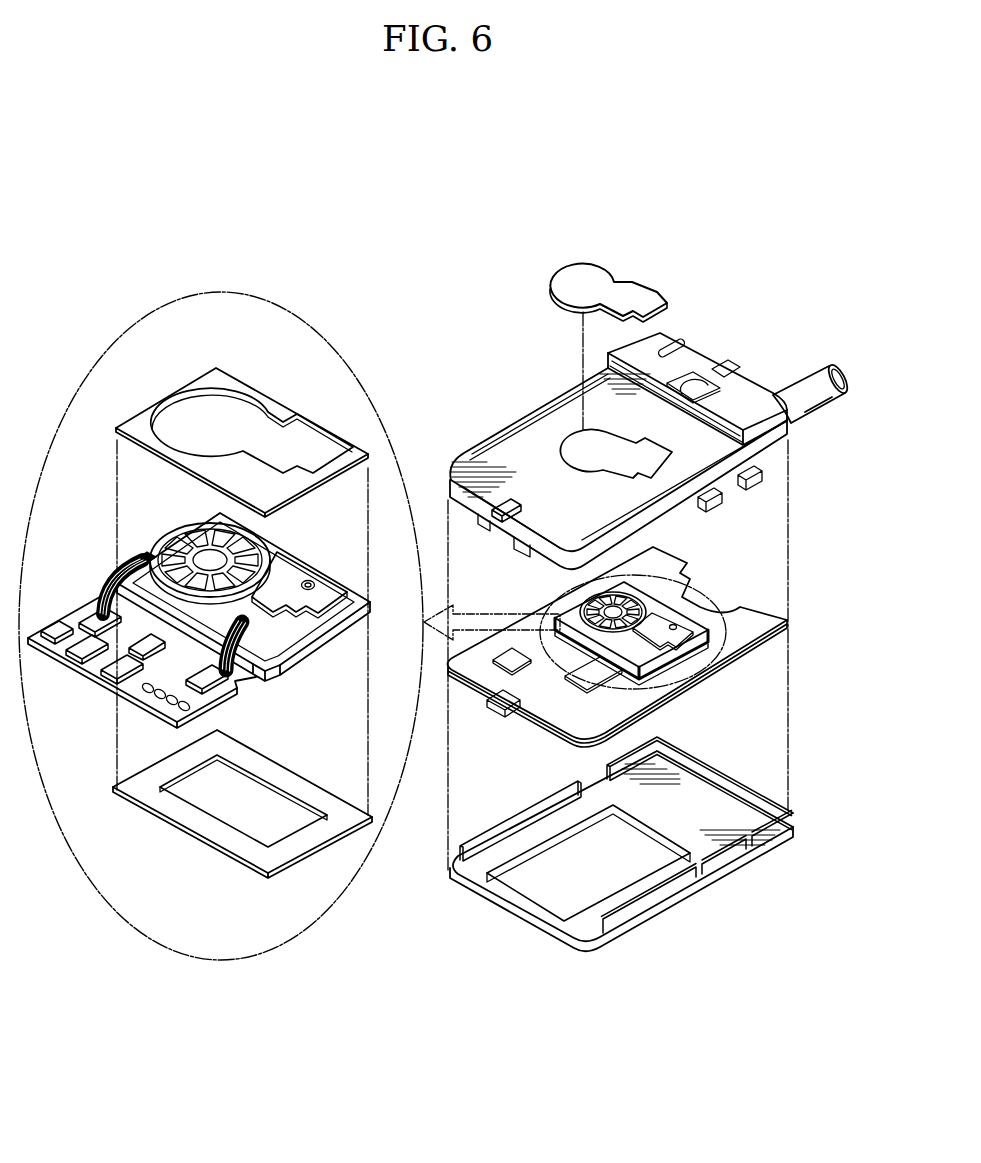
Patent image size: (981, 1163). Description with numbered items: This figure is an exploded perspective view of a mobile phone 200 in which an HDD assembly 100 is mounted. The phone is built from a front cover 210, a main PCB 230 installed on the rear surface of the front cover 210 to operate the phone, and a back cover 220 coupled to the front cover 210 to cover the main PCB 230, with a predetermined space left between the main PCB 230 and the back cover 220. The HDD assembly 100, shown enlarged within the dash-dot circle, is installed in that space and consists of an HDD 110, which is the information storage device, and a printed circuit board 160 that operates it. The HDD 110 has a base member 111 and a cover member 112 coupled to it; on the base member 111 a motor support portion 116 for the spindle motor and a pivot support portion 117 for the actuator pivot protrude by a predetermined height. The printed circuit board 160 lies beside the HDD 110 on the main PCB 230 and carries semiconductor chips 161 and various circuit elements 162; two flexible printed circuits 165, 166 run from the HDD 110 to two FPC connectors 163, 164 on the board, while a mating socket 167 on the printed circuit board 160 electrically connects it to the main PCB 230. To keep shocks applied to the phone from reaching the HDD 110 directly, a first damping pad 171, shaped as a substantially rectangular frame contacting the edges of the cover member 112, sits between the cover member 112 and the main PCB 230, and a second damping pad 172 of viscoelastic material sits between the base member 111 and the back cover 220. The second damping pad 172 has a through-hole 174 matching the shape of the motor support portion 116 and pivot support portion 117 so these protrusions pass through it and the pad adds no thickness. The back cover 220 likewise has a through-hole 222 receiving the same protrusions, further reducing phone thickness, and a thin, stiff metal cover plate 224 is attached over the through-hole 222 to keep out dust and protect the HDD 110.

The HDD assembly 100 is at (108, 546).
The HDD 110 is at (320, 557).
The base member 111 is at (293, 628).
The cover member 112 is at (300, 657).
The motor support portion 116 is at (183, 533).
The pivot support portion 117 is at (293, 577).
The printed circuit board 160 is at (47, 643).
The semiconductor chips 161 is at (85, 652).
The circuit elements 162 is at (130, 692).
The FPC connector 163 is at (95, 618).
The FPC connector 164 is at (227, 690).
The flexible printed circuit 165 is at (234, 667).
The flexible printed circuit 166 is at (120, 570).
The mating socket 167 is at (108, 600).
The first damping pad 171 is at (197, 823).
The second damping pad 172 is at (241, 392).
The through-hole 174 is at (187, 428).
The mobile phone 200 is at (705, 303).
The front cover 210 is at (692, 807).
The back cover 220 is at (607, 495).
The through-hole 222 is at (580, 447).
The cover plate 224 is at (627, 297).
The main PCB 230 is at (743, 623).